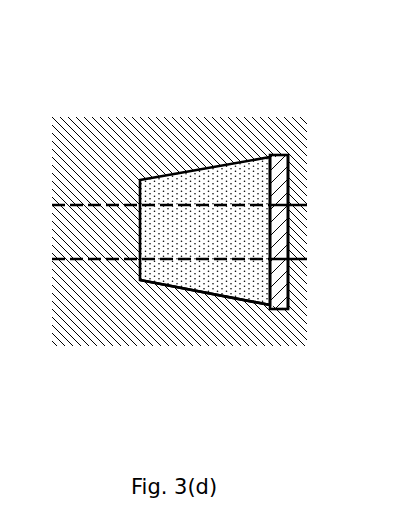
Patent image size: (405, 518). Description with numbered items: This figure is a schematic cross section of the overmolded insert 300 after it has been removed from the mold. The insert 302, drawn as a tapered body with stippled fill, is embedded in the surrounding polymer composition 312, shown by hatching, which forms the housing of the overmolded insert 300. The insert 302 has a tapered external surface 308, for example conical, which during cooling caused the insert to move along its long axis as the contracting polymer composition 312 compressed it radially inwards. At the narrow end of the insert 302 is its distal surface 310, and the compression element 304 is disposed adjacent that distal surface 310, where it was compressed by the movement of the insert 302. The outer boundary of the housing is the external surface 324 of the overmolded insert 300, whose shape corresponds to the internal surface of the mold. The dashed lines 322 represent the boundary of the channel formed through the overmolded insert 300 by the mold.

The overmolded insert 300 is at (246, 78).
The insert 302 is at (177, 199).
The compression element 304 is at (278, 172).
The tapered external surface 308 is at (252, 303).
The distal surface 310 is at (290, 309).
The polymer composition 312 is at (70, 329).
The dashed lines 322 is at (313, 205).
The external surface 324 is at (153, 346).